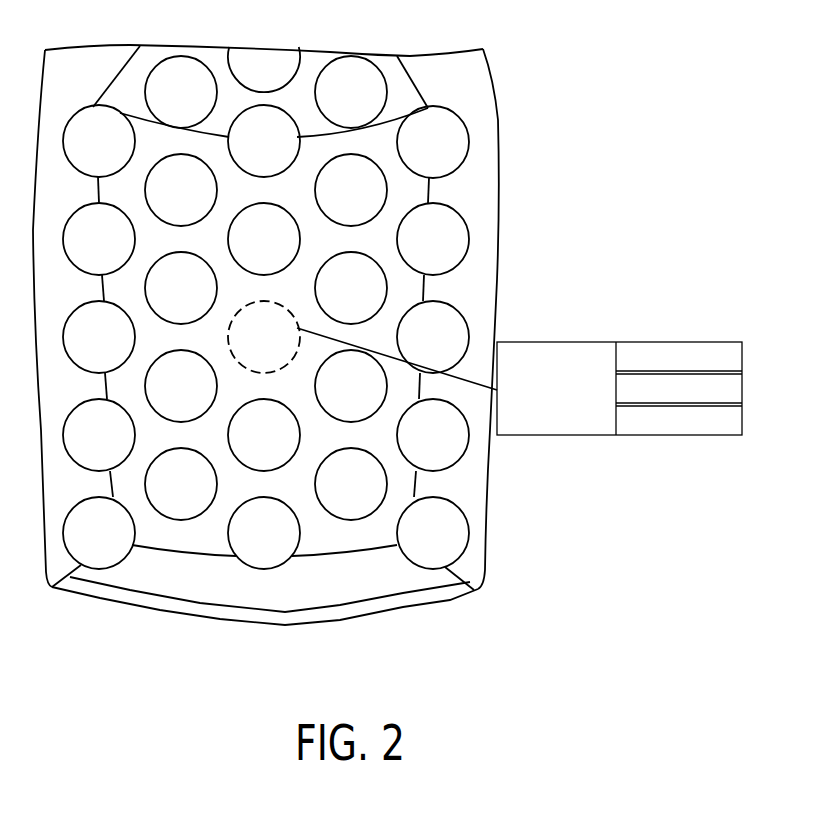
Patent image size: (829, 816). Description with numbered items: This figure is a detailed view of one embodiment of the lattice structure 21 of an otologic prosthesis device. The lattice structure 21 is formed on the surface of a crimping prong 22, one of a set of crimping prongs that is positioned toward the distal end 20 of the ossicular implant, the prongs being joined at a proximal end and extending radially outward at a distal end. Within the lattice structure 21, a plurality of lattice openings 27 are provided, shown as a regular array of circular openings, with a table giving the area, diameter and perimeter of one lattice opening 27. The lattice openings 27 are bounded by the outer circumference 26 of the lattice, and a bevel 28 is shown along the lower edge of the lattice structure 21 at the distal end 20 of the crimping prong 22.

The distal end of implant 20 is at (233, 625).
The lattice structure 21 is at (453, 150).
The crimping prong 22 is at (604, 307).
The outer circumference of lattice 26 is at (467, 532).
The lattice opening 27 is at (453, 440).
The bevel 28 is at (350, 597).